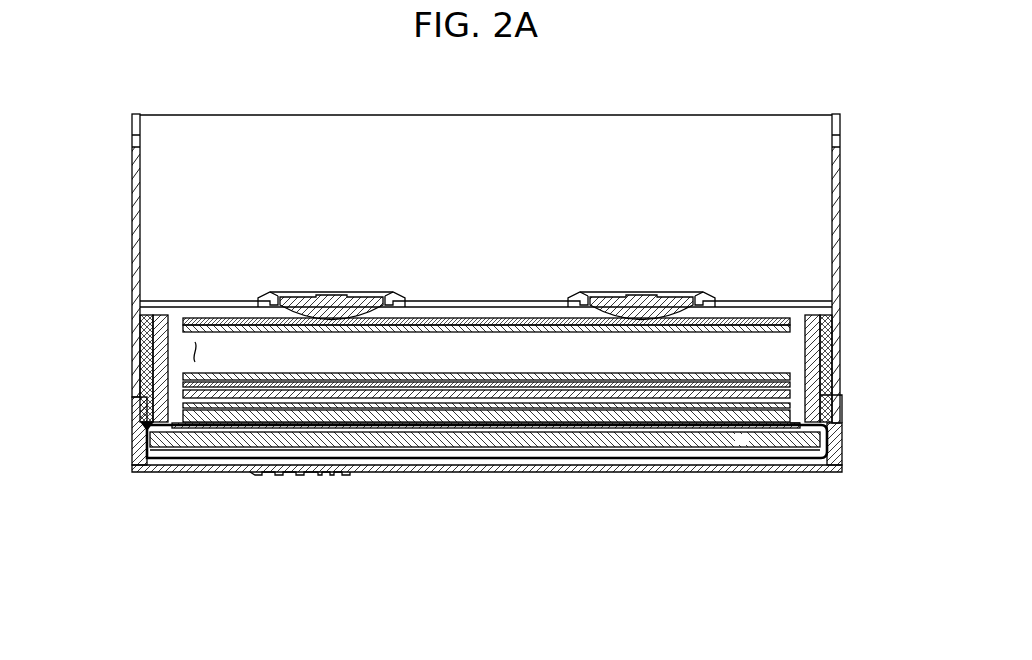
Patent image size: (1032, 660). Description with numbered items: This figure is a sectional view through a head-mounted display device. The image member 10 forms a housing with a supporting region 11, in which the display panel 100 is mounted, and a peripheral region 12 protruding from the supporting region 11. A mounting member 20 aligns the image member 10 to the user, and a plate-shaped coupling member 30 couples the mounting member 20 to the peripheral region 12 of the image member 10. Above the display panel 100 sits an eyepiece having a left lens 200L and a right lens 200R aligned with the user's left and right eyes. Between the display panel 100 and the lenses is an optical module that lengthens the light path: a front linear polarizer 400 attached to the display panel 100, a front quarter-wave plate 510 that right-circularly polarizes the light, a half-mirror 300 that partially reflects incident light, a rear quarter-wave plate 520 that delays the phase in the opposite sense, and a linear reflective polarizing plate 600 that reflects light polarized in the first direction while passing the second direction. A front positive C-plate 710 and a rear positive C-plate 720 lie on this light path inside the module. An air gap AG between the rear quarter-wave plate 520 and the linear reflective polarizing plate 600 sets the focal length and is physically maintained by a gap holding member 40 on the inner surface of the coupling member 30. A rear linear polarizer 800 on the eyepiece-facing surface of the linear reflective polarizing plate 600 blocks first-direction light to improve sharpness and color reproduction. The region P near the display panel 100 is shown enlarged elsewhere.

The mounting member 20 is at (132, 259).
The left lens 200L is at (330, 300).
The right lens 200R is at (640, 300).
The rear linear polarizer 800 is at (790, 322).
The linear reflective polarizing plate 600 is at (790, 331).
The air gap AG is at (193, 358).
The coupling member 30 is at (140, 382).
The gap holding member 40 is at (140, 405).
The rear quarter-wave plate 520 is at (792, 377).
The rear positive C-plate 720 is at (792, 382).
The front positive C-plate 710 is at (792, 395).
The half-mirror 300 is at (792, 413).
The front linear polarizer 400 is at (680, 433).
The display panel 100 is at (635, 447).
The P region P is at (742, 440).
The front quarter-wave plate 510 is at (785, 423).
The image member 10 is at (487, 482).
The supporting region 11 is at (187, 467).
The peripheral region 12 is at (137, 448).